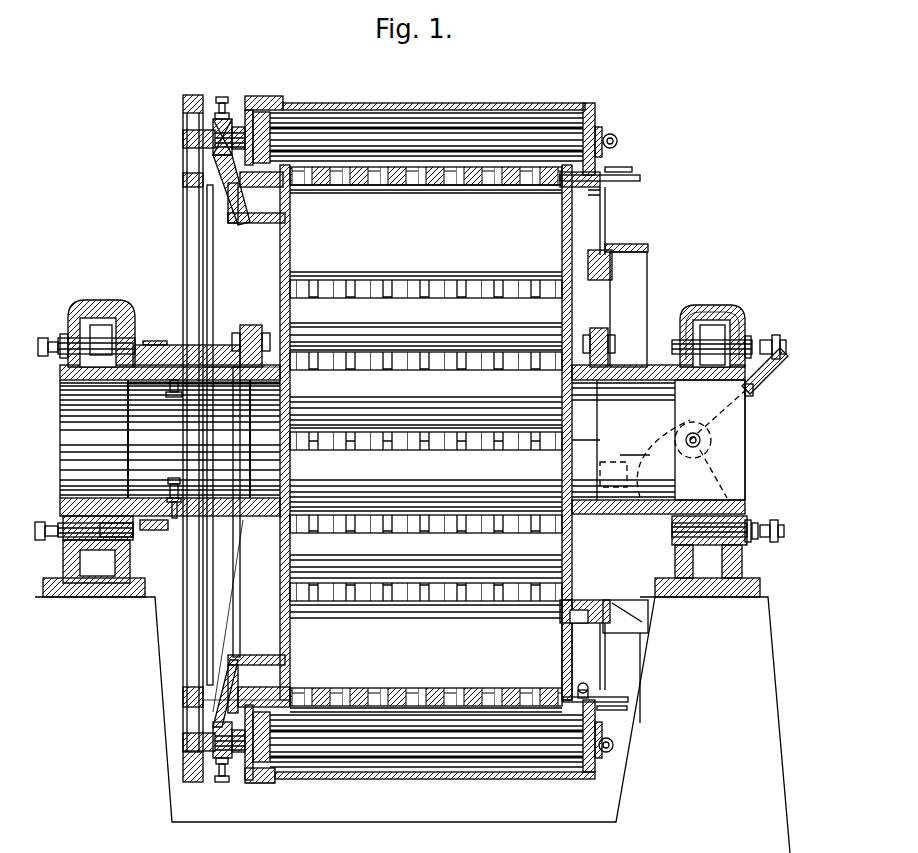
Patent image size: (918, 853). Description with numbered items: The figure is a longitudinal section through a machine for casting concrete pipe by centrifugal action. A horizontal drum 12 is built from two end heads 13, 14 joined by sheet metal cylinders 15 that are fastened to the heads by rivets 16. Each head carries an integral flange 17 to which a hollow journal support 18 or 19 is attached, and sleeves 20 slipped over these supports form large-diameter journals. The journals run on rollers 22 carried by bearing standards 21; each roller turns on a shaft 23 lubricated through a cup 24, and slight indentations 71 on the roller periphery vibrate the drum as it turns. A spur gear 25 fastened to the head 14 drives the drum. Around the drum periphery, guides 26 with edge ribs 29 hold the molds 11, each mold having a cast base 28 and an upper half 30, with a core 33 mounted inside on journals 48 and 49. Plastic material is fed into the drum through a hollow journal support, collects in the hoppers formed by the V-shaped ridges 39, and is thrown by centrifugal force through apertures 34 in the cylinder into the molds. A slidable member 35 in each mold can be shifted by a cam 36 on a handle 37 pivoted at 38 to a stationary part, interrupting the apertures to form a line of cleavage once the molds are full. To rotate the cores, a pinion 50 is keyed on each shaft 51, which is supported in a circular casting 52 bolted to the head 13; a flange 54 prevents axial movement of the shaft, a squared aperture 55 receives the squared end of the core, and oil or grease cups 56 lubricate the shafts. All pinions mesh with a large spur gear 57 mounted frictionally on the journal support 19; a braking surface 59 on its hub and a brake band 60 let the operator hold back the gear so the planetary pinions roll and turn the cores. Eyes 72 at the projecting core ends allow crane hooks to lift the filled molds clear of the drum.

The mold 11 is at (482, 103).
The drum 12 is at (548, 215).
The end head 13 is at (270, 670).
The end head 14 is at (562, 657).
The sheet metal cylinder 15 is at (320, 693).
The rivet 16 is at (585, 688).
The flange 17 is at (252, 330).
The hollow journal support 18 is at (737, 490).
The hollow journal support 19 is at (140, 498).
The sleeve 20 is at (72, 378).
The bearing standard 21 is at (128, 582).
The roller 22 is at (718, 318).
The shaft 23 is at (738, 345).
The cup 24 is at (46, 335).
The spur gear 25 is at (612, 272).
The guide 26 is at (612, 178).
The base 28 is at (284, 698).
The rib 29 is at (600, 700).
The upper half 30 is at (270, 784).
The core 33 is at (560, 118).
The aperture 34 is at (372, 700).
The slidable member 35 is at (608, 177).
The cam 36 is at (648, 470).
The handle 37 is at (770, 374).
The pivot 38 is at (700, 440).
The V-shaped ridge 39 is at (436, 545).
The journal 48 is at (600, 128).
The journal 49 is at (262, 120).
The pinion 50 is at (193, 95).
The shaft 51 is at (200, 138).
The circular casting 52 is at (232, 205).
The flange 54 is at (240, 127).
The squared aperture 55 is at (200, 148).
The oil or grease cup 56 is at (222, 97).
The large spur gear 57 is at (195, 220).
The braking surface 59 is at (182, 505).
The brake band 60 is at (158, 530).
The indentation 71 is at (100, 325).
The eye 72 is at (617, 137).